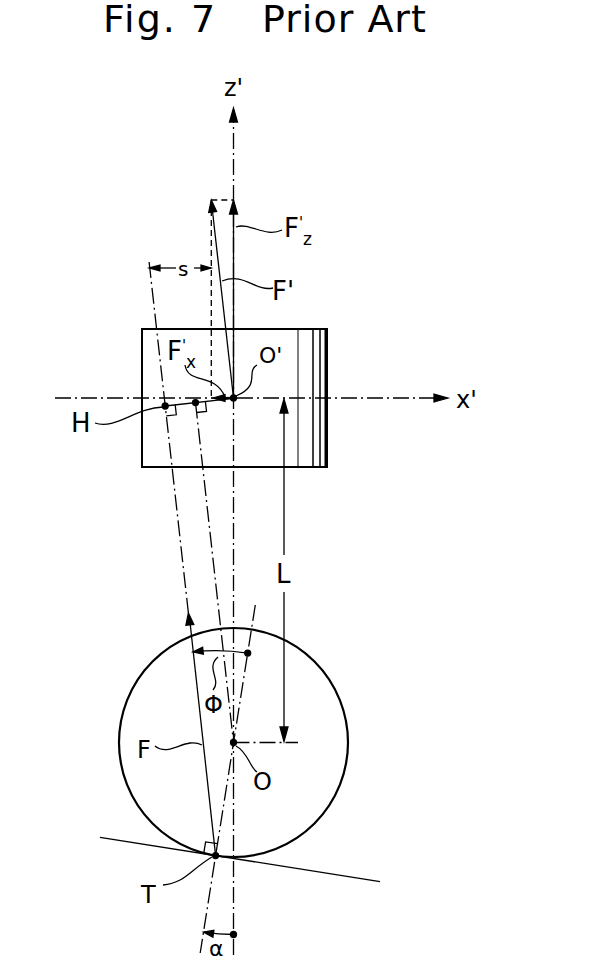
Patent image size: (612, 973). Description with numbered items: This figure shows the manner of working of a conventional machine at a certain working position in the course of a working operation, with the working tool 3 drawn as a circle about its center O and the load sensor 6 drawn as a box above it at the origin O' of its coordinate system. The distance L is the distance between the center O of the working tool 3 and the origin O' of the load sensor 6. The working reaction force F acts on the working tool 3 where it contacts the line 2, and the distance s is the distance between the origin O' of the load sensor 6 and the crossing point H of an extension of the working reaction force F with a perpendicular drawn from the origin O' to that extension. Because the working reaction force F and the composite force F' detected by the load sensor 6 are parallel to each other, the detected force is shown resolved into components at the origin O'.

The contact surface (tangent line at contact point T) 2 is at (318, 888).
The working tool 3 is at (333, 725).
The load sensor 6 is at (320, 349).